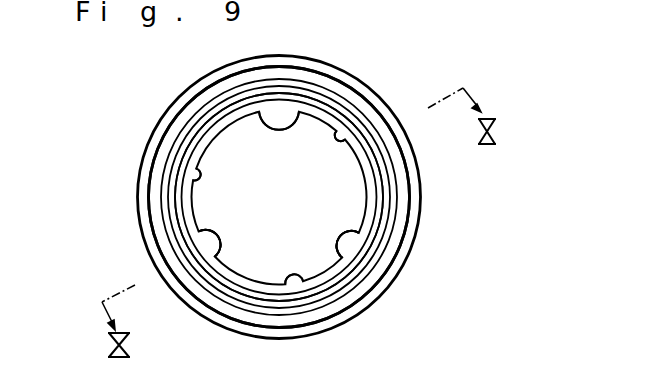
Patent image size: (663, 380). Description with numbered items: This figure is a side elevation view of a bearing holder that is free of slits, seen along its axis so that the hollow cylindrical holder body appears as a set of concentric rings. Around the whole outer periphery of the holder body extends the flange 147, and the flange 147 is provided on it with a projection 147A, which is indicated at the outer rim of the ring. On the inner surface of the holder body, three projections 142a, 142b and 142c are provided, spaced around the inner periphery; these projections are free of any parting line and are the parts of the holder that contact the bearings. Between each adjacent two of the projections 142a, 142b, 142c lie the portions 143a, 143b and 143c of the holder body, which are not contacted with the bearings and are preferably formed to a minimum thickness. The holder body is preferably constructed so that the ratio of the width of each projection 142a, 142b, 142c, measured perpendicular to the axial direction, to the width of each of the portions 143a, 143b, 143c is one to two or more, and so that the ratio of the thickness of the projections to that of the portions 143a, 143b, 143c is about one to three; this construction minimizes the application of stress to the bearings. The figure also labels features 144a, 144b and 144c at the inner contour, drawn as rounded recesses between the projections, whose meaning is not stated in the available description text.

The projection 142a is at (335, 131).
The projection 142b is at (300, 280).
The projection 142c is at (192, 190).
The portion of the holder body not contacted with bearings 143a is at (308, 95).
The portion of the holder body not contacted with bearings 143b is at (365, 222).
The portion of the holder body not contacted with bearings 143c is at (200, 223).
The recess 144a is at (281, 117).
The recess 144b is at (342, 242).
The recess 144c is at (205, 250).
The flange 147 is at (423, 190).
The projection 147A is at (410, 160).